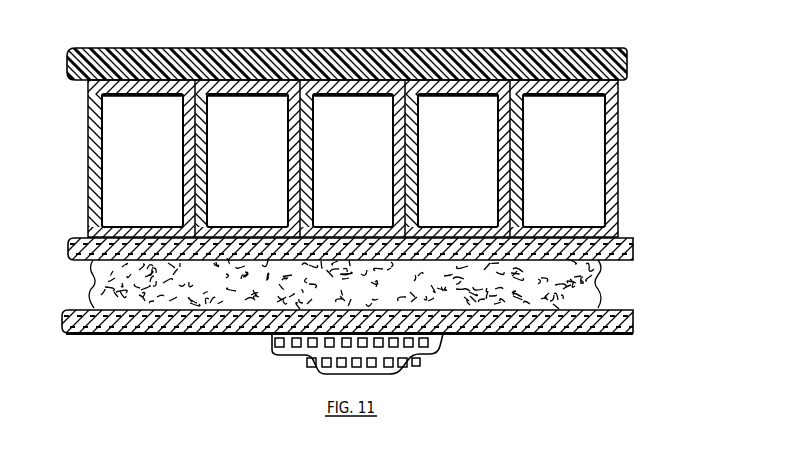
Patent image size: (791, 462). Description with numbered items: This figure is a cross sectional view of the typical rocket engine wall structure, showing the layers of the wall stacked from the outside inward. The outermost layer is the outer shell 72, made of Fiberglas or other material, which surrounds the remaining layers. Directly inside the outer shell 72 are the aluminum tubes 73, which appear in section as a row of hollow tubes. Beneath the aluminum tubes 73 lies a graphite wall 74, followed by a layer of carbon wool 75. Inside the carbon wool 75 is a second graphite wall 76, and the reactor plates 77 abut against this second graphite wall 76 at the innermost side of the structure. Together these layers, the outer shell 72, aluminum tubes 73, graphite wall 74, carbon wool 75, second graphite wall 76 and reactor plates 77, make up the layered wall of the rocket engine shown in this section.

The outer shell 72 is at (590, 48).
The aluminum tubes 73 is at (610, 155).
The graphite wall 74 is at (628, 249).
The carbon wool 75 is at (599, 281).
The second graphite wall 76 is at (607, 326).
The reactor plates 77 is at (428, 340).